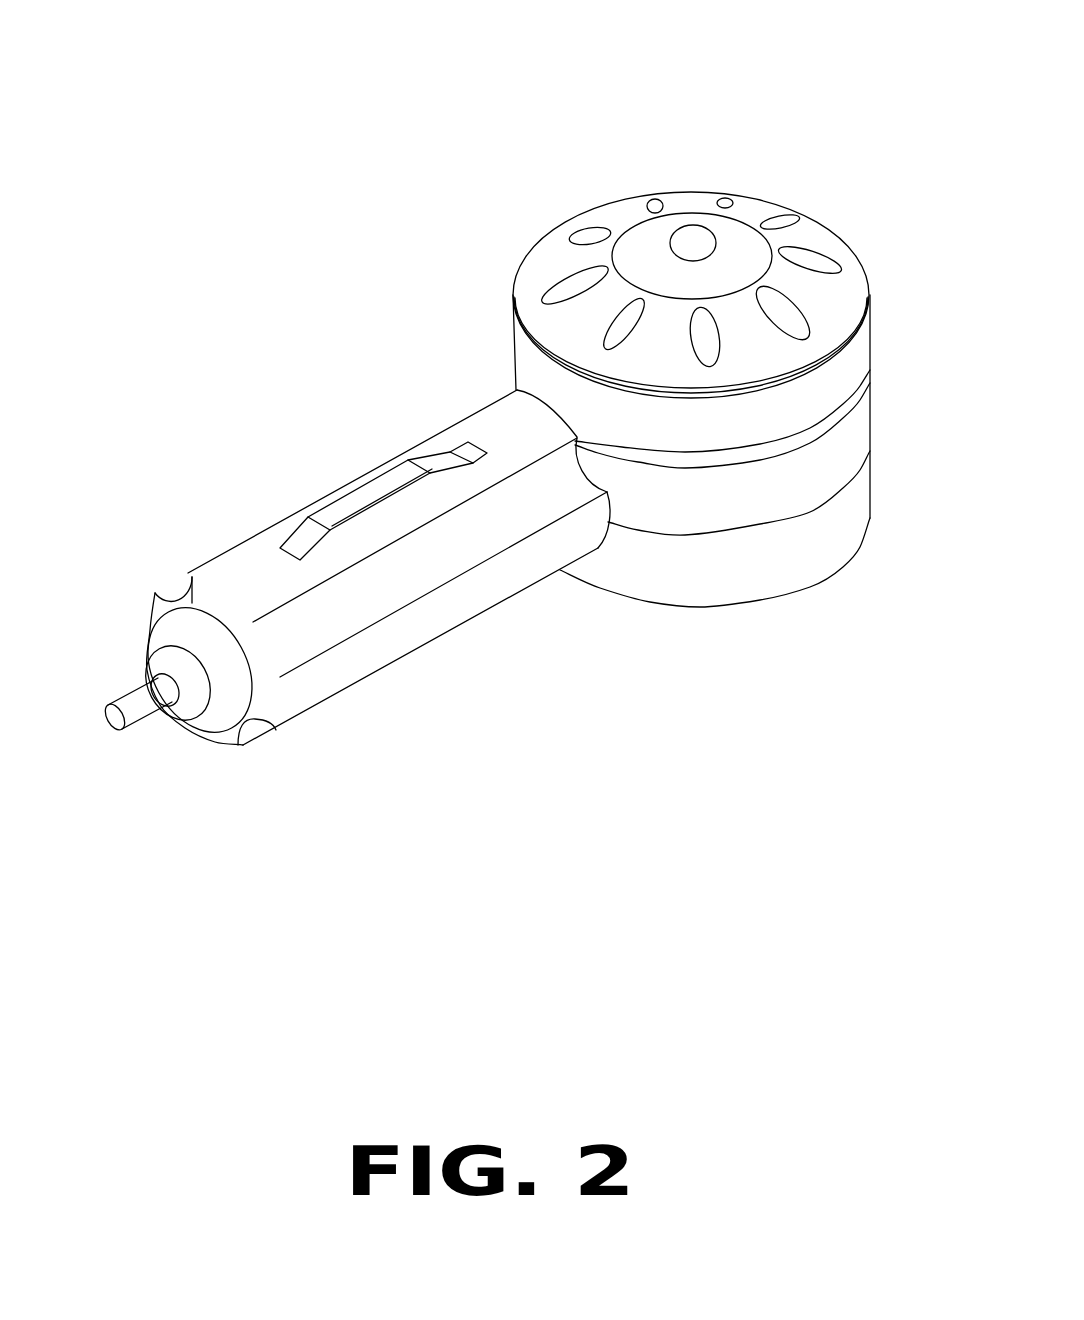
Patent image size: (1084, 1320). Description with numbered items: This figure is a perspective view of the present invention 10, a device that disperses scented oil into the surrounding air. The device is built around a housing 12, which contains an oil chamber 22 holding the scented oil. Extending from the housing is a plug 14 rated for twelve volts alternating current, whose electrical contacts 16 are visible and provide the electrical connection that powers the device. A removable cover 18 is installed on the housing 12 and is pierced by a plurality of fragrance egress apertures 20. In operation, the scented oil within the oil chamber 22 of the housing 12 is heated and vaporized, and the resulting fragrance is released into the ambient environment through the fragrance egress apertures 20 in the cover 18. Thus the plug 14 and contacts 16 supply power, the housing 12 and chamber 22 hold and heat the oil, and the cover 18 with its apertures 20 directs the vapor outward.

The present invention 10 is at (822, 173).
The housing 12 is at (723, 603).
The 12 VAC plug 14 is at (462, 627).
The electrical contacts 16 is at (372, 495).
The removable cover 18 is at (697, 220).
The fragrance egress apertures 20 is at (572, 280).
The oil chamber 22 is at (777, 408).